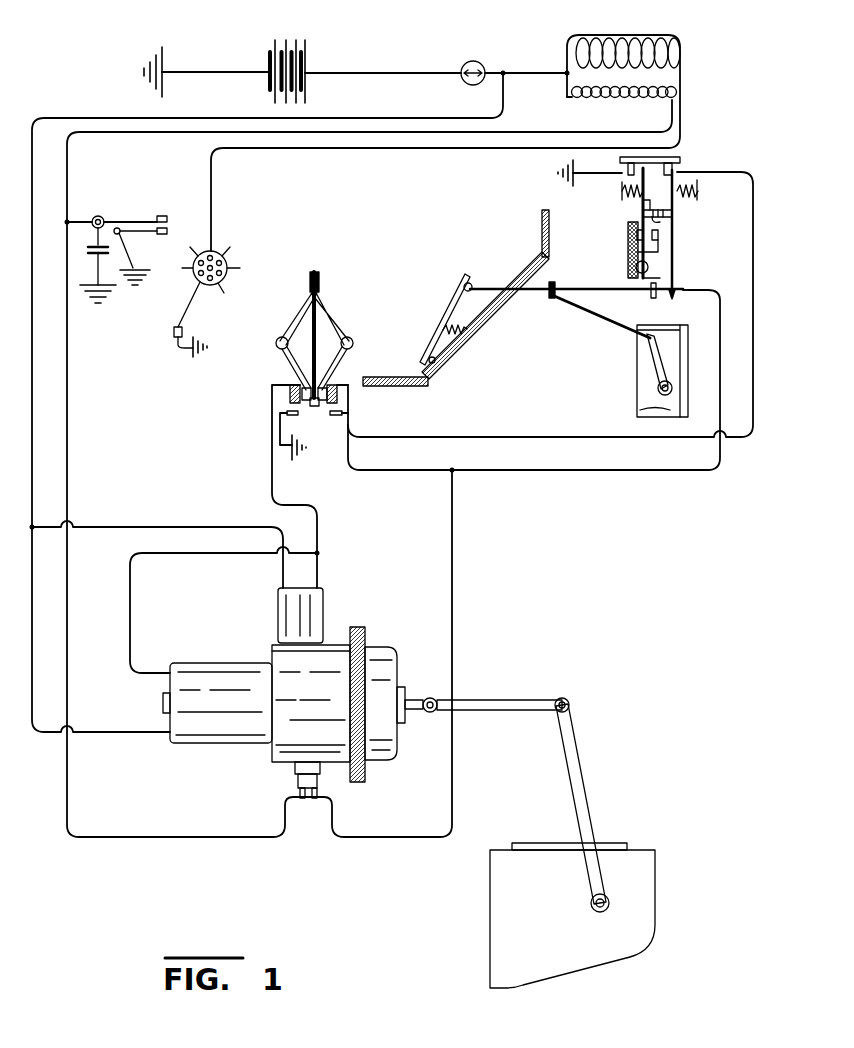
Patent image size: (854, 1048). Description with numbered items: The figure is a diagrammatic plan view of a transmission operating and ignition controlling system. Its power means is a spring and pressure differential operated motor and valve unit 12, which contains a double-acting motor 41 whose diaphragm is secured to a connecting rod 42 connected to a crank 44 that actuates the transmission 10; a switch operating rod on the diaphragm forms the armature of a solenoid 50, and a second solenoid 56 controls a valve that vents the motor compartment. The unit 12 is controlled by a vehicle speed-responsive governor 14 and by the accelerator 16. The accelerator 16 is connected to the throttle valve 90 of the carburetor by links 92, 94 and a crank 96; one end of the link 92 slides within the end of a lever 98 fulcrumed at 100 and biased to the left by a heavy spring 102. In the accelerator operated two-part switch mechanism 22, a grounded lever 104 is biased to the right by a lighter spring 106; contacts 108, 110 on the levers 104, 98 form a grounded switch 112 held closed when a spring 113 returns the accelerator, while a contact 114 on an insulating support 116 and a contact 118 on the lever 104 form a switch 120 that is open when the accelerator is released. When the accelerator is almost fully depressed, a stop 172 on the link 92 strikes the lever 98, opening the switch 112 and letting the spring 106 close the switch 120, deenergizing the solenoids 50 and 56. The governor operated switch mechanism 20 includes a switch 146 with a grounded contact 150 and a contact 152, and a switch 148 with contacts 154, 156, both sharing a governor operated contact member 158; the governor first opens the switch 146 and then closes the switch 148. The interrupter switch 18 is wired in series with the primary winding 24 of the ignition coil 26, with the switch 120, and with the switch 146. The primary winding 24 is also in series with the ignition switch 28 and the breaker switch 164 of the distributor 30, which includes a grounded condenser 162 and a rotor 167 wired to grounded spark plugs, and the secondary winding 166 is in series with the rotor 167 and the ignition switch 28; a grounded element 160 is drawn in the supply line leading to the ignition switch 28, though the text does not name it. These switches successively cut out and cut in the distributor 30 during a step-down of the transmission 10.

The transmission 10 is at (643, 892).
The motor and valve unit 12 is at (284, 695).
The governor 14 is at (333, 320).
The accelerator 16 is at (456, 300).
The interrupter switch 18 is at (290, 780).
The governor operated switch mechanism 20 is at (318, 394).
The accelerator operated switch mechanism 22 is at (655, 230).
The primary winding 24 is at (619, 100).
The ignition coil 26 is at (657, 61).
The ignition switch 28 is at (458, 62).
The distributor 30 is at (184, 262).
The double-acting motor 41 is at (377, 757).
The connecting rod 42 is at (490, 702).
The crank 44 is at (582, 800).
The solenoid 50 is at (230, 738).
The solenoid 56 is at (285, 617).
The throttle valve 90 is at (647, 390).
The link 92 is at (585, 292).
The link 94 is at (596, 316).
The crank 96 is at (653, 350).
The lever 98 is at (675, 300).
The fulcrum 100 is at (678, 164).
The spring 102 is at (690, 186).
The lever 104 is at (641, 202).
The spring 106 is at (622, 196).
The contact 108 is at (641, 216).
The contact 110 is at (656, 212).
The switch 112 is at (662, 221).
The spring 113 is at (446, 362).
The contact 114 is at (659, 238).
The support 116 is at (636, 268).
The contact 118 is at (630, 248).
The switch 120 is at (656, 247).
The switch 146 is at (345, 445).
The switch 148 is at (394, 361).
The grounded contact 150 is at (283, 413).
The contact 152 is at (348, 413).
The contact 154 is at (293, 386).
The contact 156 is at (337, 381).
The governor operated contact member 158 is at (287, 397).
The battery 160 is at (303, 50).
The condenser 162 is at (108, 258).
The breaker switch 164 is at (171, 233).
The secondary winding 166 is at (611, 42).
The rotor 167 is at (229, 250).
The stop 172 is at (652, 294).